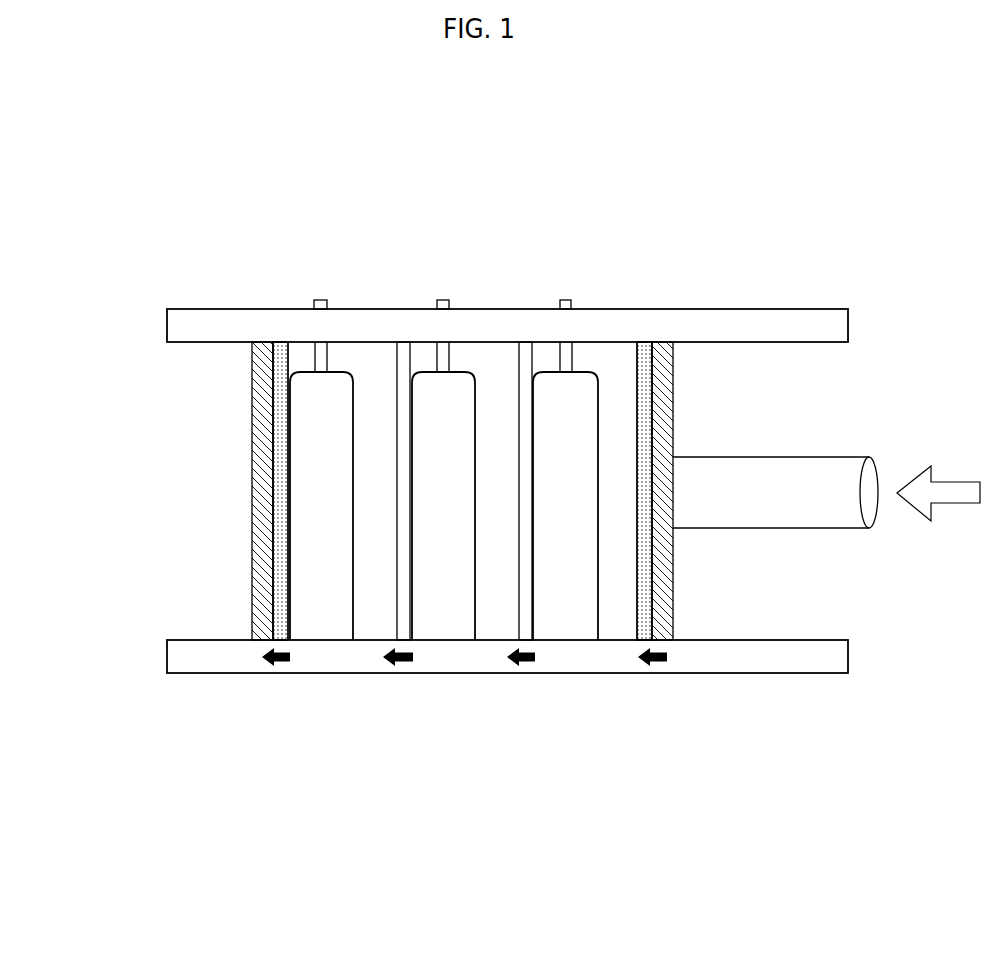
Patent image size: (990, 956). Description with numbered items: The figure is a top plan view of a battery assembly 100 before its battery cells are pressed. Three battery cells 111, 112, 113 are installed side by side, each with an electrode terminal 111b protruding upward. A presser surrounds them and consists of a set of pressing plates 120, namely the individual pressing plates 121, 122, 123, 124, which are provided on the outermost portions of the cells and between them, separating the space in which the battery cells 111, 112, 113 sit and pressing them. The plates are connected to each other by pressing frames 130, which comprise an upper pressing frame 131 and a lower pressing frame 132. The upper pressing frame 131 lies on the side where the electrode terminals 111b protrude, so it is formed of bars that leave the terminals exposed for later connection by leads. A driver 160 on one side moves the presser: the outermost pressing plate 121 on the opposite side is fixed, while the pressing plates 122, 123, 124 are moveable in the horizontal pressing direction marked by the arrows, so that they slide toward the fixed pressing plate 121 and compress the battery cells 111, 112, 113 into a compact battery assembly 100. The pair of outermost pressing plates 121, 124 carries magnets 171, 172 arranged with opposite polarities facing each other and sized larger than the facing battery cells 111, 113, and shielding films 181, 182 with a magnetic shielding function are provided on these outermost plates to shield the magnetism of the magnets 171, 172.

The battery assembly 100 is at (483, 120).
The battery cell 111 is at (328, 625).
The electrode terminal 111b is at (320, 300).
The battery cell 112 is at (447, 625).
The battery cell 113 is at (577, 625).
The pressing plates 120 is at (673, 210).
The pressing plate 121 is at (296, 348).
The pressing plate 122 is at (400, 350).
The pressing plate 123 is at (520, 350).
The pressing plate 124 is at (637, 360).
The pressing frames 130 is at (92, 309).
The upper pressing frame 131 is at (167, 331).
The lower pressing frame 132 is at (167, 660).
The driver 160 is at (820, 518).
The magnet 171 is at (282, 508).
The magnet 172 is at (645, 433).
The shielding film 181 is at (262, 413).
The shielding film 182 is at (665, 385).